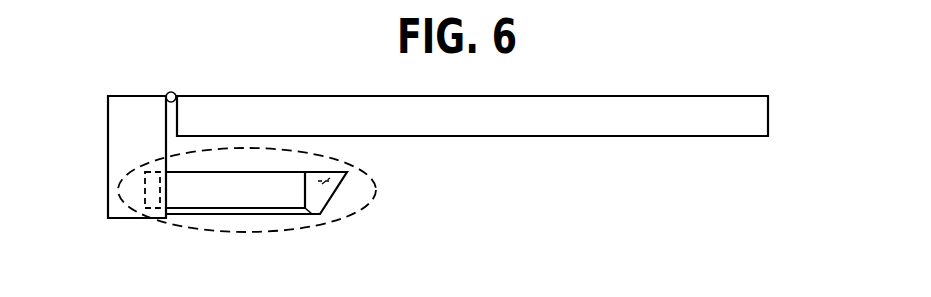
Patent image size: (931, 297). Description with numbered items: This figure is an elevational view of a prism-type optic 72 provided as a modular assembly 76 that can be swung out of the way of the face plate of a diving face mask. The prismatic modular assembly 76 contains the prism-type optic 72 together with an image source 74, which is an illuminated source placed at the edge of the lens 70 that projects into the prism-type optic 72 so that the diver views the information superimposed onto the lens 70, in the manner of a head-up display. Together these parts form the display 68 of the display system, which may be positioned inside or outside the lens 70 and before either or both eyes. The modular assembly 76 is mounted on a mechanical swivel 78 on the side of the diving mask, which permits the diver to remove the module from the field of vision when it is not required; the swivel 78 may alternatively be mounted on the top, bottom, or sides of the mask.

The display 68 is at (280, 232).
The lens 70 is at (758, 122).
The prism-type optic 72 is at (318, 182).
The image source 74 is at (145, 184).
The modular assembly 76 is at (108, 205).
The mechanical swivel 78 is at (166, 95).